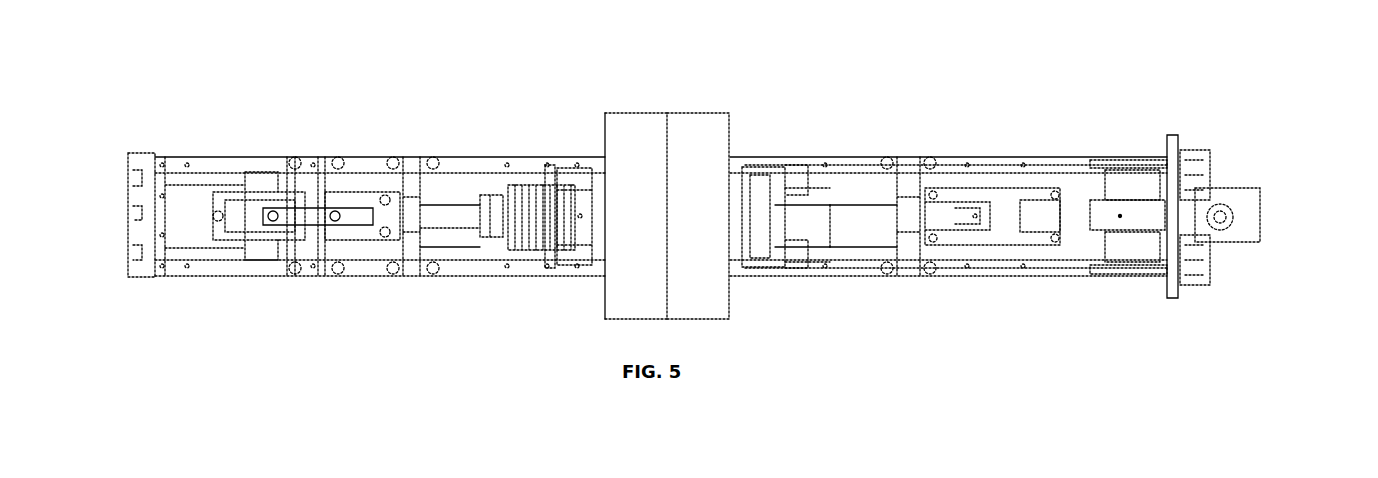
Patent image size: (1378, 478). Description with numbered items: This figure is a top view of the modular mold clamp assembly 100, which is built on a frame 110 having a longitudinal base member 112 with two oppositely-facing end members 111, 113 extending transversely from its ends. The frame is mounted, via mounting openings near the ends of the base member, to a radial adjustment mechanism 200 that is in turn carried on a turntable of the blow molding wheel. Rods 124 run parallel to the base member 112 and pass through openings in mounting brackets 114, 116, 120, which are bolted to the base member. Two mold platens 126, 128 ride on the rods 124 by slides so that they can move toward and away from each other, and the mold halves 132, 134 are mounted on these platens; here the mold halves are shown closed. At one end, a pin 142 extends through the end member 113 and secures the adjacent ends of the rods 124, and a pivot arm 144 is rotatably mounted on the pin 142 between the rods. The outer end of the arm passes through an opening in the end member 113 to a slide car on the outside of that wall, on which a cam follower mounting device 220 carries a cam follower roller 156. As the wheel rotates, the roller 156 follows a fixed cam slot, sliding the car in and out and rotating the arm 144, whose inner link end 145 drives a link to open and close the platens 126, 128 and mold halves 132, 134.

The modular mold clamp assembly 100 is at (203, 66).
The frame 110 is at (157, 135).
The end member 111 is at (153, 230).
The radial adjustment mechanism 200 is at (130, 283).
The base member 112 is at (860, 163).
The mounting bracket 114 is at (315, 148).
The mounting bracket 116 is at (412, 277).
The rod 124 is at (468, 160).
The mold platen 128 is at (593, 158).
The mold half 134 is at (630, 118).
The mold half 132 is at (700, 118).
The mold platen 126 is at (740, 158).
The mounting bracket 120 is at (958, 168).
The inner link end 145 is at (1023, 270).
The pivot arm 144 is at (1088, 262).
The pin 142 is at (1118, 168).
The end member 113 is at (1206, 173).
The cam follower mounting device 220 is at (1240, 191).
The cam follower roller 156 is at (1262, 218).